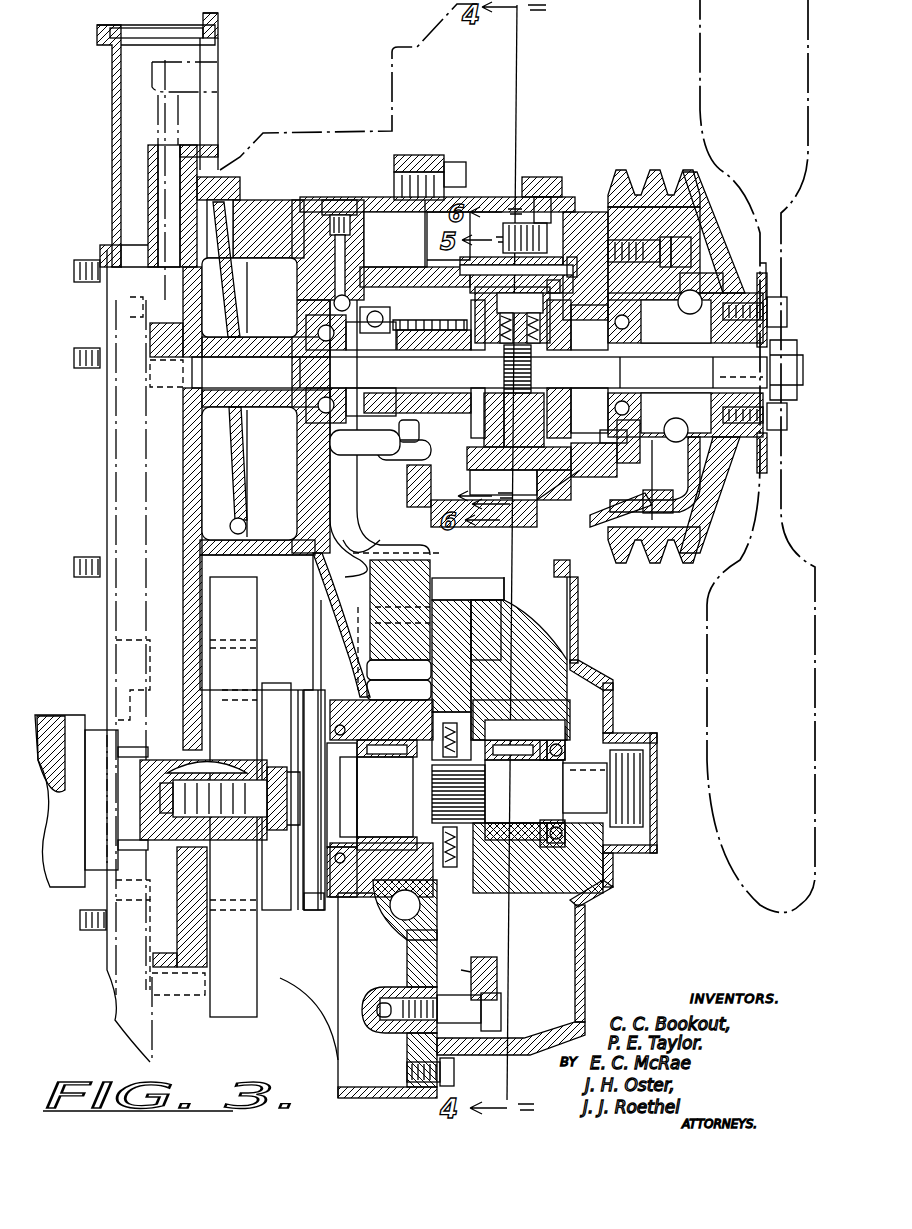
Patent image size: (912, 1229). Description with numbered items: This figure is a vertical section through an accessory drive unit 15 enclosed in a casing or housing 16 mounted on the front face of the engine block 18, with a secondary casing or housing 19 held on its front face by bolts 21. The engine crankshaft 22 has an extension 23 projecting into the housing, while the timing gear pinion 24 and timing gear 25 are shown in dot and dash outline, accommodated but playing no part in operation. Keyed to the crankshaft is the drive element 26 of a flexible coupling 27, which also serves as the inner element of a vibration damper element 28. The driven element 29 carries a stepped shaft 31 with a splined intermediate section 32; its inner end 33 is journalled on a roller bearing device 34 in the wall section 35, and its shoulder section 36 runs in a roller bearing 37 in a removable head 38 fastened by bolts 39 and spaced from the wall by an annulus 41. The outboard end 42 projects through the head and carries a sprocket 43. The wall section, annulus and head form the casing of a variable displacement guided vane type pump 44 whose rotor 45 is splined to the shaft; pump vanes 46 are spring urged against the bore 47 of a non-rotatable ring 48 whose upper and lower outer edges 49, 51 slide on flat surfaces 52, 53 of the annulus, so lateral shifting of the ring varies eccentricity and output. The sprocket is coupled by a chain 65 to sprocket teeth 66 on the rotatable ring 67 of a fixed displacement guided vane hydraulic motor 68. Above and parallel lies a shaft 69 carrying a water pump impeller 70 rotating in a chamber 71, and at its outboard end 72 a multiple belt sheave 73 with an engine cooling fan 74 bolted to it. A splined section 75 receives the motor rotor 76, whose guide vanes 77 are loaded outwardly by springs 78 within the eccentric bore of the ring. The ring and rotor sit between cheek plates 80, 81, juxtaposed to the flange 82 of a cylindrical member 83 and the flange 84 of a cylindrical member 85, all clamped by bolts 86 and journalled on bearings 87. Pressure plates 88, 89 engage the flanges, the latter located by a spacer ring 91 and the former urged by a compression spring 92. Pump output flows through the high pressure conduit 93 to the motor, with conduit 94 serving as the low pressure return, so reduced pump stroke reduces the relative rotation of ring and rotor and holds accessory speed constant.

The accessory drive unit 15 is at (574, 106).
The casing or housing 16 is at (185, 430).
The engine block 18 is at (112, 145).
The secondary casing or housing 19 is at (570, 200).
The bolts 21 is at (458, 170).
The crankshaft 22 is at (72, 715).
The extension 23 is at (120, 830).
The timing gear pinion 24 is at (105, 897).
The timing gear 25 is at (122, 422).
The drive element 26 is at (230, 745).
The flexible coupling 27 is at (276, 680).
The crankshaft vibration damper element 28 is at (255, 612).
The driven element 29 is at (308, 690).
The stepped shaft 31 is at (415, 835).
The splined intermediate section 32 is at (498, 790).
The inner end 33 is at (362, 794).
The roller bearing device 34 is at (332, 895).
The wall section 35 is at (404, 962).
The shoulder section 36 is at (525, 791).
The roller bearing 37 is at (535, 850).
The removable head 38 is at (500, 968).
The bolts 39 is at (500, 1012).
The annulus 41 is at (464, 972).
The outboard end 42 is at (591, 787).
The sprocket 43 is at (583, 887).
The variable displacement guided vane type pump 44 is at (523, 647).
The rotor 45 is at (430, 765).
The pump vanes 46 is at (458, 712).
The bore 47 is at (452, 868).
The non-rotatable ring 48 is at (425, 686).
The upper outer edge 49 is at (420, 665).
The lower outer edge 51 is at (395, 918).
The flat surface 52 is at (480, 690).
The flat surface 53 is at (407, 945).
The chain 65 is at (520, 222).
The sprocket teeth 66 is at (545, 195).
The rotatable ring 67 is at (560, 520).
The fixed displacement guided vane hydraulic motor 68 is at (600, 560).
The shaft 69 is at (479, 372).
The water pump impeller 70 is at (236, 292).
The chamber 71 is at (242, 470).
The outboard end 72 is at (752, 360).
The multiple belt sheave 73 is at (650, 570).
The engine cooling fan 74 is at (708, 660).
The splined section 75 is at (530, 369).
The rotor 76 is at (503, 347).
The guide vanes 77 is at (512, 315).
The springs 78 is at (485, 350).
The cheek plate 80 is at (417, 366).
The cheek plate 81 is at (575, 350).
The flange 82 is at (504, 426).
The cylindrical member 83 is at (371, 369).
The flange 84 is at (556, 430).
The cylindrical member 85 is at (600, 350).
The bolts 86 is at (640, 237).
The bearings 87 is at (348, 365).
The pressure plate 88 is at (405, 460).
The pressure plate 89 is at (608, 470).
The spacer ring 91 is at (643, 463).
The compression spring 92 is at (400, 300).
The high pressure conduit 93 is at (370, 510).
The conduit 94 is at (330, 571).